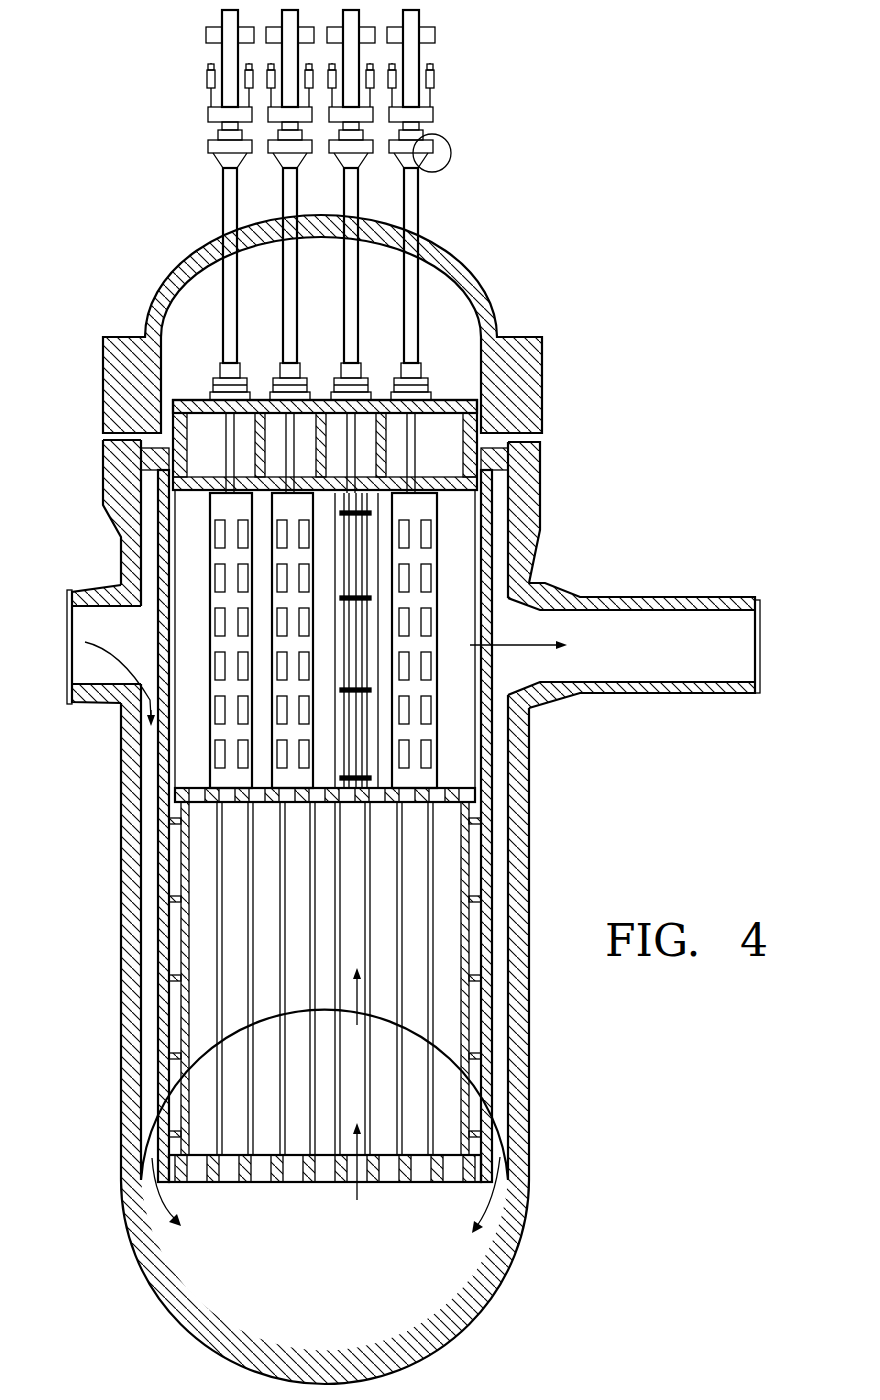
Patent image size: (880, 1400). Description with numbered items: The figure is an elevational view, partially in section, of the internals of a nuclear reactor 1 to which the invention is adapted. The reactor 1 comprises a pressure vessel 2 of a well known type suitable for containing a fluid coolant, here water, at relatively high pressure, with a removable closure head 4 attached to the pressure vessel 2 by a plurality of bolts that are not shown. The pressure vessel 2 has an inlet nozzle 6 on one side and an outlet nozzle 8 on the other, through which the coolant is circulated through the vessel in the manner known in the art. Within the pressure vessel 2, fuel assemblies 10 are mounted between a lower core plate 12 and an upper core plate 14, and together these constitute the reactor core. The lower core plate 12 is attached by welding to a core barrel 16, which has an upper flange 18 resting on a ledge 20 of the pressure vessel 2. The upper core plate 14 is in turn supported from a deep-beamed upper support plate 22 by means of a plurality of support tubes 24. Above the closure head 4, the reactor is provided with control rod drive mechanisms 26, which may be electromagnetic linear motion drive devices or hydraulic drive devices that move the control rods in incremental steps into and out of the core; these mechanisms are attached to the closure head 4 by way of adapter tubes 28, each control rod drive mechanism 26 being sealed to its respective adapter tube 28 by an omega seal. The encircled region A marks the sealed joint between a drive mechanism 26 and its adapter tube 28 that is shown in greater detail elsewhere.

The reactor 1 is at (551, 356).
The pressure vessel 2 is at (530, 1072).
The removable closure head 4 is at (472, 292).
The inlet nozzle 6 is at (80, 630).
The outlet nozzle 8 is at (745, 636).
The fuel assemblies 10 is at (293, 923).
The lower core plate 12 is at (282, 1182).
The upper core plate 14 is at (468, 792).
The core barrel 16 is at (488, 862).
The upper flange 18 is at (505, 457).
The ledge 20 is at (540, 505).
The upper support plate 22 is at (540, 405).
The support tubes 24 is at (210, 578).
The control rod drive mechanisms 26 is at (218, 26).
The adapter tubes 28 is at (284, 210).
The detail region A is at (446, 140).